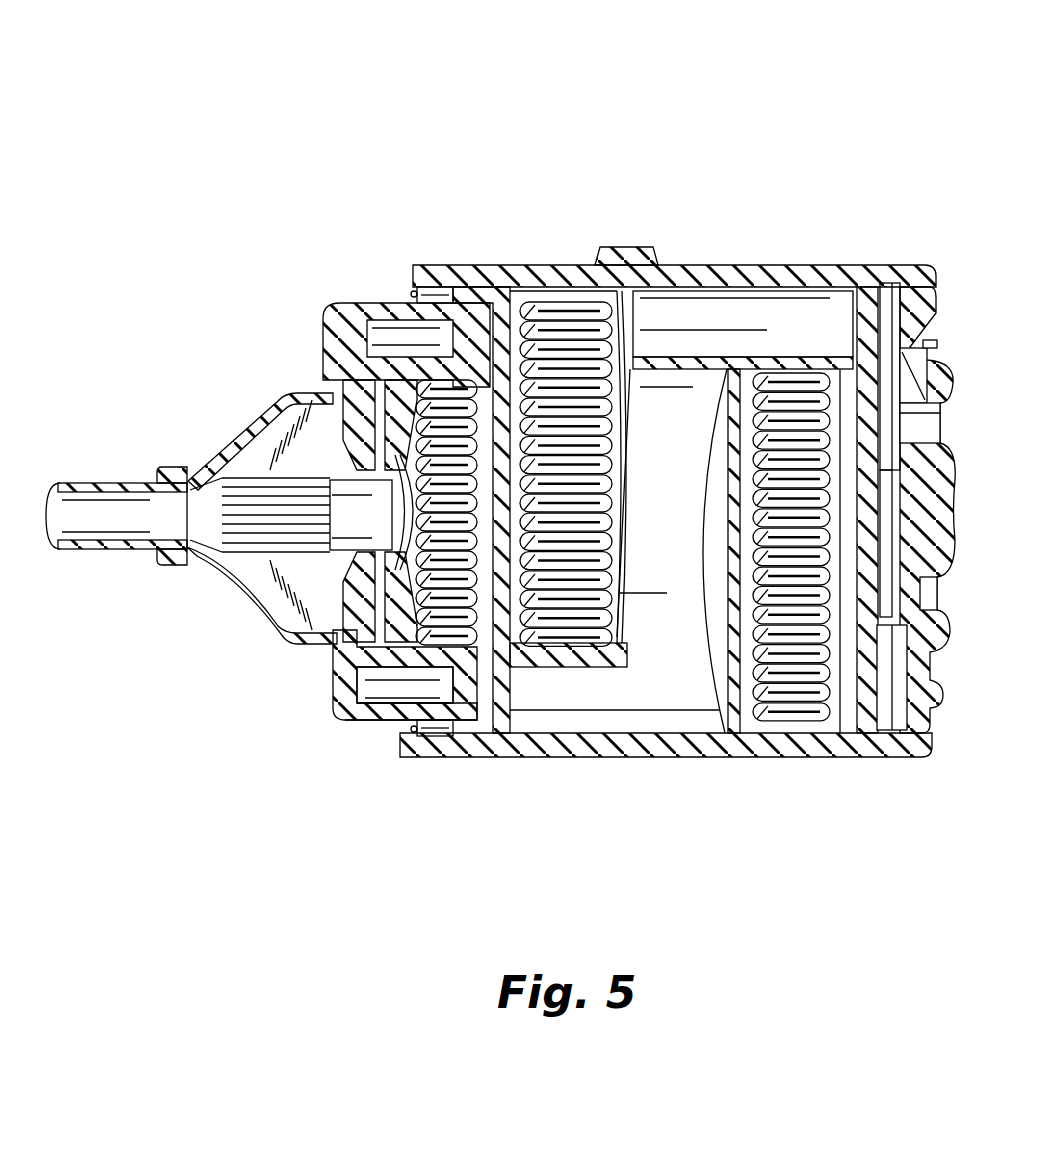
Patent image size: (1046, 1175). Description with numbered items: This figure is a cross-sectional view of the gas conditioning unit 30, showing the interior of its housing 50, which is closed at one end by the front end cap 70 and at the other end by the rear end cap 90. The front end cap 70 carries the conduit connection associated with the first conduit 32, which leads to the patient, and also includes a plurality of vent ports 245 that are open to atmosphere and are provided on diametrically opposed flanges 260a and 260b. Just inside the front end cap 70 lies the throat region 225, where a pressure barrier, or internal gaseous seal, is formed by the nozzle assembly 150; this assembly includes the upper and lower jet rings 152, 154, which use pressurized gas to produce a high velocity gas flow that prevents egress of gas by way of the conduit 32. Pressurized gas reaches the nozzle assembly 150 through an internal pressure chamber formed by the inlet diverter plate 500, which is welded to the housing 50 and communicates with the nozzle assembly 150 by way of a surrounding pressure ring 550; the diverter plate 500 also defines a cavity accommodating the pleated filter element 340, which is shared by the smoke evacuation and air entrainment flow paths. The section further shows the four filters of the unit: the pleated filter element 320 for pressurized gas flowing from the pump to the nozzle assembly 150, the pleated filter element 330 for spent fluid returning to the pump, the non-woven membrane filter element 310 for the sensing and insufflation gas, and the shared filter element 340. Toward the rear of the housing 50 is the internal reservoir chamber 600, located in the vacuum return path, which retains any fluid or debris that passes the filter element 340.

The gas conditioning unit 30 is at (366, 118).
The first conduit 32 is at (90, 553).
The housing 50 is at (703, 263).
The front end cap 70 is at (348, 305).
The rear end cap 90 is at (935, 735).
The nozzle assembly 150 is at (320, 392).
The upper jet ring 152 is at (310, 637).
The lower jet ring 154 is at (375, 730).
The throat region 225 is at (243, 565).
The vent ports 245 is at (410, 287).
The flange 260a is at (409, 288).
The flange 260b is at (417, 740).
The non-woven membrane filter element 310 is at (914, 282).
The disc-shaped pleated filter element 320 is at (560, 313).
The disc-shaped pleated filter element 330 is at (800, 715).
The disc-shaped pleated filter element 340 is at (441, 395).
The inlet diverter plate 500 is at (430, 683).
The pressure ring 550 is at (337, 693).
The internal reservoir chamber 600 is at (668, 680).